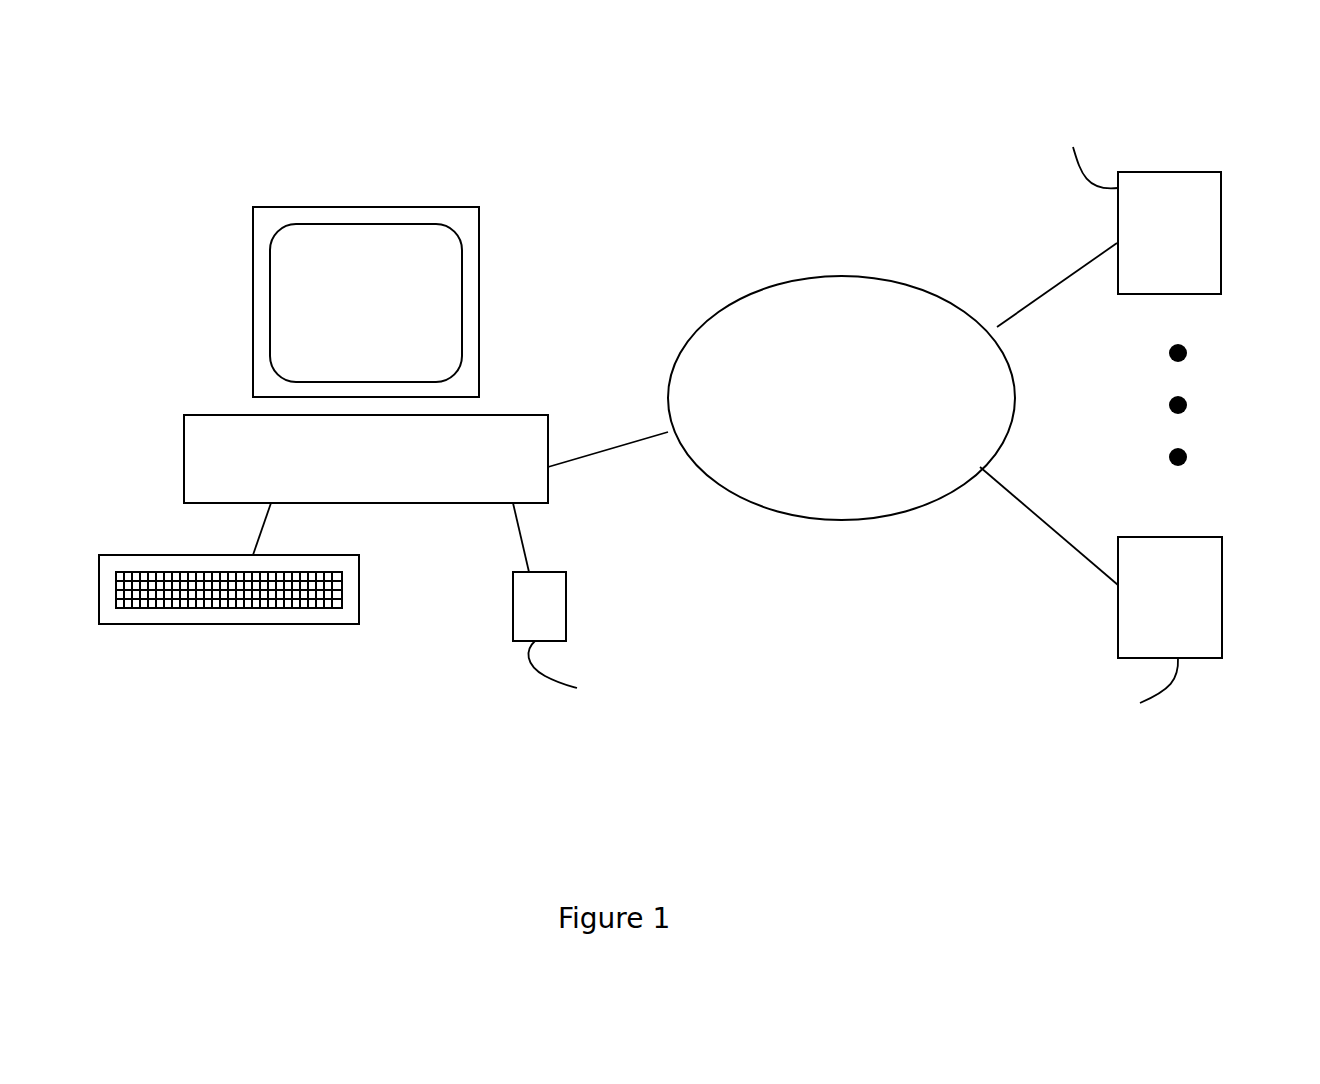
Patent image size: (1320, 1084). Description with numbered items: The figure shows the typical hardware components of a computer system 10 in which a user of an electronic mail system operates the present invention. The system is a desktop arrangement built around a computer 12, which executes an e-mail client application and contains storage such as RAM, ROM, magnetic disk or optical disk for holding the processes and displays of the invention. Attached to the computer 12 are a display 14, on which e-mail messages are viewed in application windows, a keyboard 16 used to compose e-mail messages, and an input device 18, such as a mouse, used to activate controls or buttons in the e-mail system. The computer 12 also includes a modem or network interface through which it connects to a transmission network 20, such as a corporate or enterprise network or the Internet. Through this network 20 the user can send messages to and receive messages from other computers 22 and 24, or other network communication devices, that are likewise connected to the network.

The computer system 10 is at (240, 752).
The computer 12 is at (513, 397).
The display 14 is at (443, 190).
The keyboard 16 is at (375, 605).
The input device 18 is at (582, 607).
The transmission network 20 is at (910, 258).
The other computer 22 is at (1186, 155).
The other computer 24 is at (1186, 519).